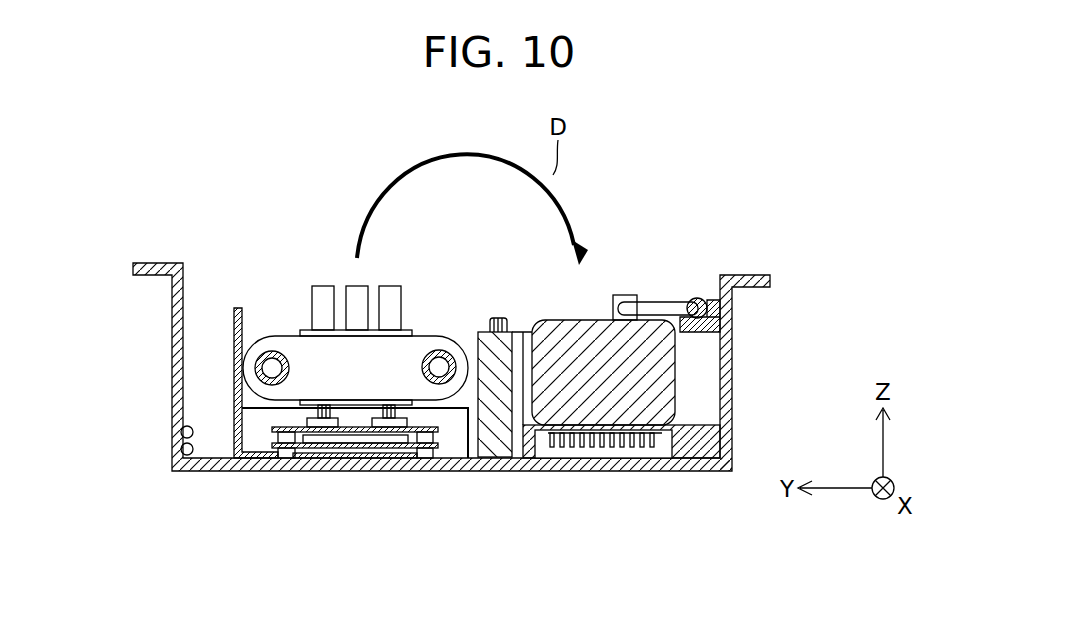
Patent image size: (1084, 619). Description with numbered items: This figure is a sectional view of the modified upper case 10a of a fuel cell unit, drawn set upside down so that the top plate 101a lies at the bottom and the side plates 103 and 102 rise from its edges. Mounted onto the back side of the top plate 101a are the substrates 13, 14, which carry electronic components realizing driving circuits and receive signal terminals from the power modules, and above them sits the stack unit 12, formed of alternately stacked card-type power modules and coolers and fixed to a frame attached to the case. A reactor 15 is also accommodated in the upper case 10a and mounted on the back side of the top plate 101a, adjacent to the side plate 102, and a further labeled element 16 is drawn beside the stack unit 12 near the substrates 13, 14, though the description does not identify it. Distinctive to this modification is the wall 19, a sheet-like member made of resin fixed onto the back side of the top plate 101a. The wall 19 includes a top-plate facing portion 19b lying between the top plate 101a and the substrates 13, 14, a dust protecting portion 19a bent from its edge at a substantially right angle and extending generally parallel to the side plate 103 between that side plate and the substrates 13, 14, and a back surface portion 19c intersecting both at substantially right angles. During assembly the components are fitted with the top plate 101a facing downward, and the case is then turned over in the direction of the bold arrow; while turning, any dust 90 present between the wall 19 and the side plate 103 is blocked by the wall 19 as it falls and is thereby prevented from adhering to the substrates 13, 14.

The upper case 10a is at (126, 237).
The stack unit 12 is at (272, 298).
The substrate 13 is at (440, 428).
The substrate 14 is at (474, 462).
The reactor 15 is at (560, 321).
The fixed block 16 is at (478, 338).
The wall 19 is at (333, 507).
The dust protecting portion 19a is at (236, 436).
The top-plate facing portion 19b is at (345, 470).
The back surface portion 19c is at (262, 437).
The dust 90 is at (180, 451).
The top plate 101a is at (217, 457).
The side plate 102 is at (732, 347).
The side plate 103 is at (172, 325).